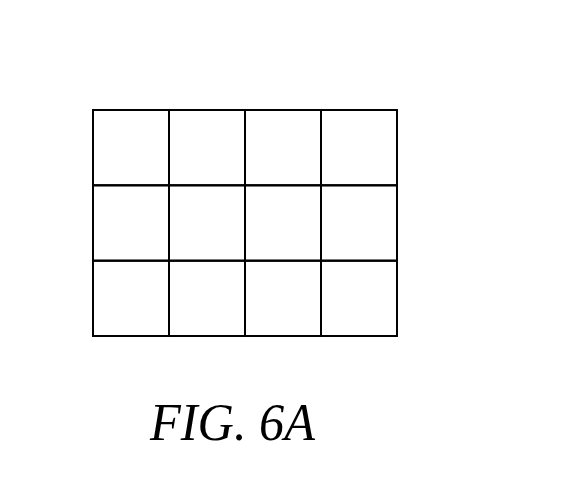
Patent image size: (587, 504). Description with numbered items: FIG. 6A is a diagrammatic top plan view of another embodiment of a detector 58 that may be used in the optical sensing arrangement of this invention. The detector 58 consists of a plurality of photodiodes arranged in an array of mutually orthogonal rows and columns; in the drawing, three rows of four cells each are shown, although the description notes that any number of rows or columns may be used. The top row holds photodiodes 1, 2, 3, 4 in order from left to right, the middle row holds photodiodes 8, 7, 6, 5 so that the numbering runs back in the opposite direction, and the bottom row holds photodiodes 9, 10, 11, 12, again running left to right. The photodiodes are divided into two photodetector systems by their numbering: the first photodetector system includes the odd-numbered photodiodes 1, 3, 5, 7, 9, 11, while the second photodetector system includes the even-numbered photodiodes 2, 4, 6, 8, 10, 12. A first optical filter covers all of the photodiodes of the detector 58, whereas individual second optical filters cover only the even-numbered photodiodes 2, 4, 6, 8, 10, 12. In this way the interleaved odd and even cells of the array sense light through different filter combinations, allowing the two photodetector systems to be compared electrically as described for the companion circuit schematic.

The detector 58 is at (125, 73).
The photodiode 1 is at (131, 147).
The photodiode 2 is at (207, 147).
The photodiode 3 is at (283, 147).
The photodiode 4 is at (359, 147).
The photodiode 5 is at (359, 222).
The photodiode 6 is at (283, 222).
The photodiode 7 is at (207, 222).
The photodiode 8 is at (131, 222).
The photodiode 9 is at (131, 298).
The photodiode 10 is at (207, 298).
The photodiode 11 is at (283, 298).
The photodiode 12 is at (359, 298).